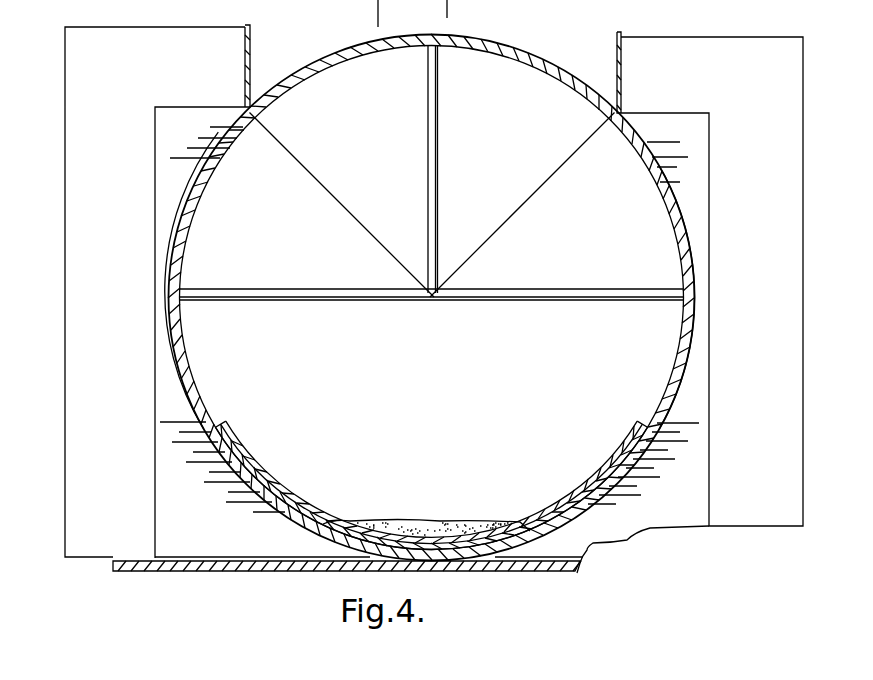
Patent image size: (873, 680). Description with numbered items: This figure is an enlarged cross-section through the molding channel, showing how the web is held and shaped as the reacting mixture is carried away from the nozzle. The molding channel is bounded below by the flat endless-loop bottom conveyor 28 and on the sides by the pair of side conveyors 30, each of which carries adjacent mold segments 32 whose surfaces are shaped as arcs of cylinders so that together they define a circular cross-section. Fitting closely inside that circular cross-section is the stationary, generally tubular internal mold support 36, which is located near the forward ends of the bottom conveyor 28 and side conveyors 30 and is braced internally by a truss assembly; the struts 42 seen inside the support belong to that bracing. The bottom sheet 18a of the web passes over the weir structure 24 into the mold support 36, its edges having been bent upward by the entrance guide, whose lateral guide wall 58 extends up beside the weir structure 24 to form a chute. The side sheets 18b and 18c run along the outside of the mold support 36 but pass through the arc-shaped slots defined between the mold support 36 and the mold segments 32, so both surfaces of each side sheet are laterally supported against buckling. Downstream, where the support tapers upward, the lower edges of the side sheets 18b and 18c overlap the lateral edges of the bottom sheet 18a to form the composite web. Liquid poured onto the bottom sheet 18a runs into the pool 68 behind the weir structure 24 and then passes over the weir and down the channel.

The bottom sheet 18a is at (232, 437).
The side sheet 18b is at (188, 383).
The side sheet 18c is at (683, 384).
The weir structure 24 is at (434, 552).
The bottom conveyor 28 is at (292, 571).
The side conveyors 30 is at (138, 15).
The mold segments 32 is at (167, 183).
The internal mold support 36 is at (338, 52).
The bracing strut 42 is at (404, 181).
The lateral guide wall 58 is at (258, 497).
The pool 68 is at (352, 522).